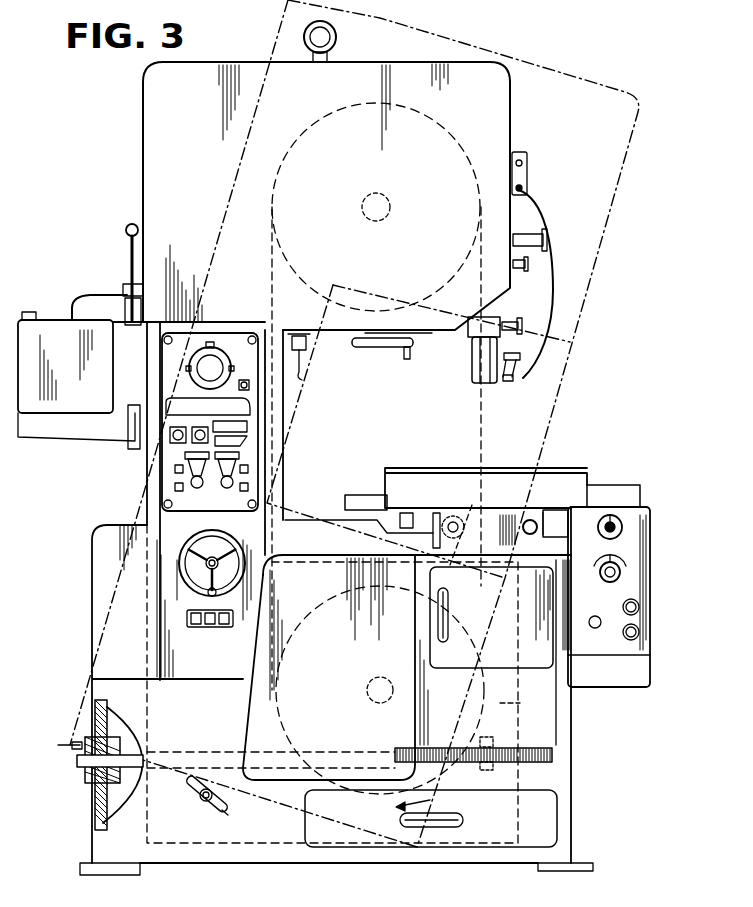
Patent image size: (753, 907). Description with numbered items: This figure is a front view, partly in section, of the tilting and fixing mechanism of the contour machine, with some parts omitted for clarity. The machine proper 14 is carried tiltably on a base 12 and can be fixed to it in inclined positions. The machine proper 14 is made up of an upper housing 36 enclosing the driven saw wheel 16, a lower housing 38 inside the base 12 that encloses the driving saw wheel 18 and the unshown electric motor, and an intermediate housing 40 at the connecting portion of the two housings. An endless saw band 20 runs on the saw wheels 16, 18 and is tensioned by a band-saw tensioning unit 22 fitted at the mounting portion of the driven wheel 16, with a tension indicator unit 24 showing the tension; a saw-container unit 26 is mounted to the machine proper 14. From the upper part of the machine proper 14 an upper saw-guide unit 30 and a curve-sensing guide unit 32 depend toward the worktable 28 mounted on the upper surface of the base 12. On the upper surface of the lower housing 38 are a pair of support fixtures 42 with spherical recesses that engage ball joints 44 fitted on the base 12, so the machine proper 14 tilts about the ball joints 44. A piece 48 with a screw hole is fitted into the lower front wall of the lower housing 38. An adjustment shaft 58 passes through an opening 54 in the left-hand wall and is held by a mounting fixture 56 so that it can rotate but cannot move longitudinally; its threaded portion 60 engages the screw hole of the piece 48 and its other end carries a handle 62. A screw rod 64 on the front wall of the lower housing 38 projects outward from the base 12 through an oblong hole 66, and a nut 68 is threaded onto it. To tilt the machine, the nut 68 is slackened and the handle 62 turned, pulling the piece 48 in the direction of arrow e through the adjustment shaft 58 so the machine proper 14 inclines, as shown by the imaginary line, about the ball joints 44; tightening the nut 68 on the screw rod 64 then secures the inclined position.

The base 12 is at (571, 768).
The machine proper 14 is at (287, 466).
The driven saw wheel 16 is at (437, 117).
The driving saw wheel 18 is at (490, 683).
The endless saw band 20 is at (486, 444).
The band-saw tensioning unit 22 is at (413, 343).
The tension indicator unit 24 is at (298, 374).
The saw-container unit 26 is at (72, 305).
The worktable 28 is at (557, 468).
The upper saw-guide unit 30 is at (466, 372).
The curve-sensing guide unit 32 is at (496, 366).
The upper housing 36 is at (512, 125).
The lower housing 38 is at (520, 703).
The intermediate housing 40 is at (291, 428).
The support fixture 42 is at (437, 509).
The ball joint 44 is at (544, 507).
The piece with a screw hole 48 is at (486, 737).
The opening 54 is at (93, 735).
The mounting fixture 56 is at (88, 784).
The adjustment shaft 58 is at (197, 754).
The threaded portion 60 is at (500, 760).
The handle 62 is at (77, 766).
The screw rod 64 is at (203, 801).
The oblong hole 66 is at (222, 810).
The nut 68 is at (190, 783).